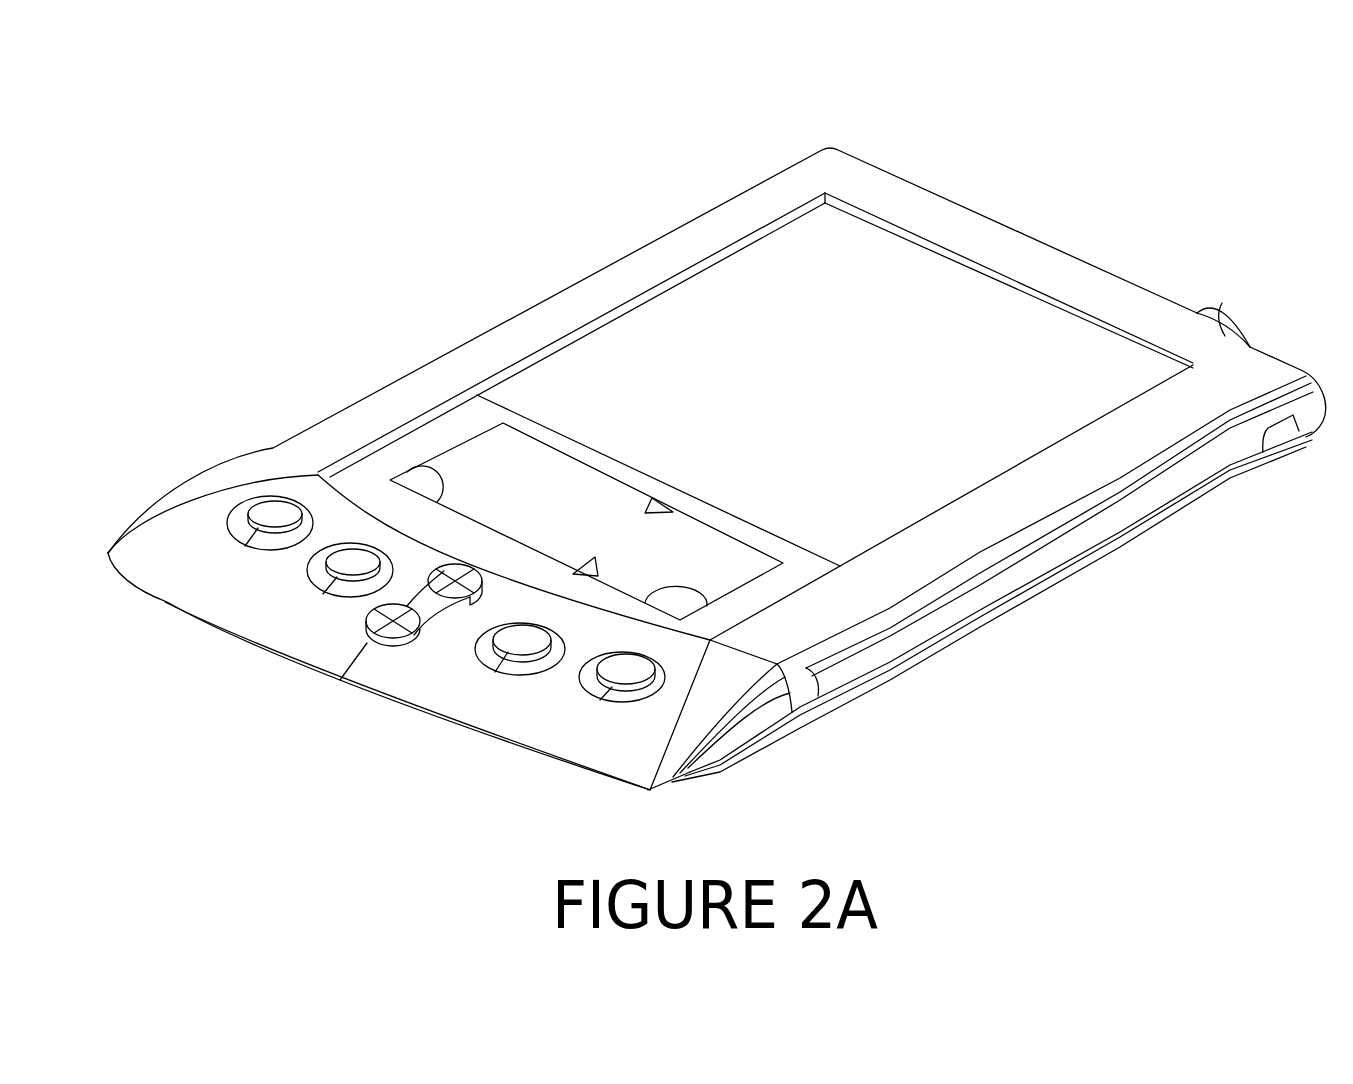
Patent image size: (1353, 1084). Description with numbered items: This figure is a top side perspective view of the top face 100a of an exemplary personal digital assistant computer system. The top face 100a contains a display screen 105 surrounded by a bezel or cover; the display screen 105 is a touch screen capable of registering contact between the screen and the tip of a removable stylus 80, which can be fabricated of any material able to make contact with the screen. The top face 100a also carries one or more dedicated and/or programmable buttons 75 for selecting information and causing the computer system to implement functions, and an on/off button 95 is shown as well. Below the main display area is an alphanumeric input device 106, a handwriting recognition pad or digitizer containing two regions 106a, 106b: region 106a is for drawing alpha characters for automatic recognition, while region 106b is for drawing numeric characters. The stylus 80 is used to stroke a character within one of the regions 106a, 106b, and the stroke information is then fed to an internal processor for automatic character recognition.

The top face 100a is at (193, 108).
The buttons 75 is at (275, 507).
The stylus 80 is at (1032, 571).
The on/off button 95 is at (1227, 312).
The display screen 105 is at (828, 311).
The alphanumeric input device 106 is at (487, 452).
The region 106a is at (540, 505).
The region 106b is at (705, 580).